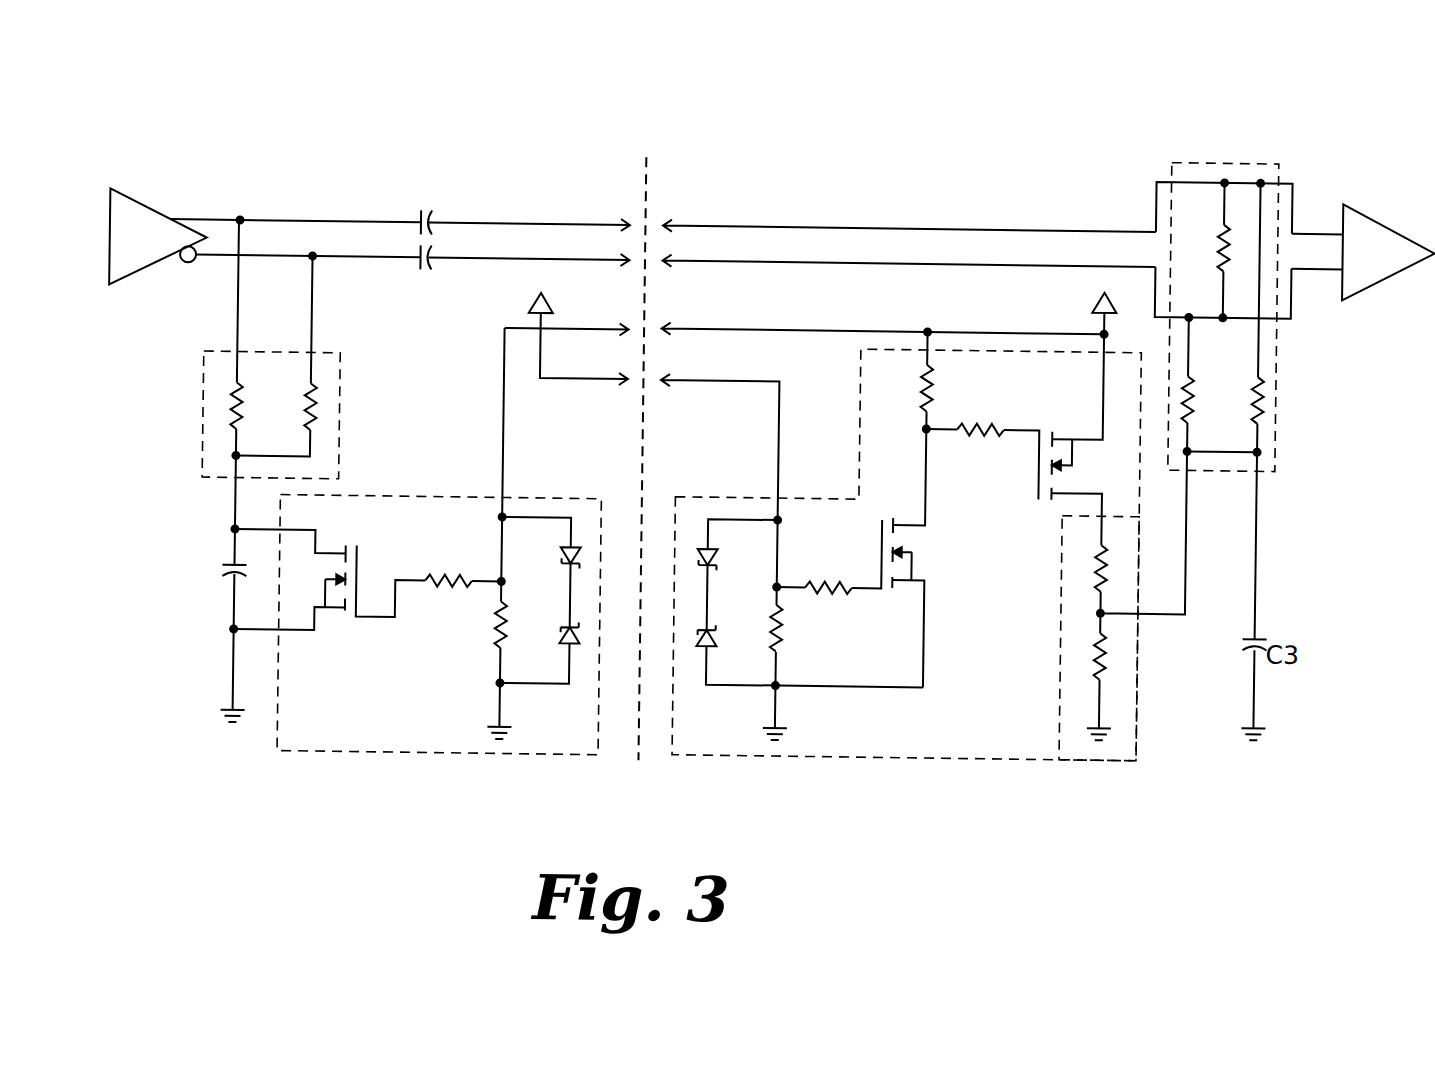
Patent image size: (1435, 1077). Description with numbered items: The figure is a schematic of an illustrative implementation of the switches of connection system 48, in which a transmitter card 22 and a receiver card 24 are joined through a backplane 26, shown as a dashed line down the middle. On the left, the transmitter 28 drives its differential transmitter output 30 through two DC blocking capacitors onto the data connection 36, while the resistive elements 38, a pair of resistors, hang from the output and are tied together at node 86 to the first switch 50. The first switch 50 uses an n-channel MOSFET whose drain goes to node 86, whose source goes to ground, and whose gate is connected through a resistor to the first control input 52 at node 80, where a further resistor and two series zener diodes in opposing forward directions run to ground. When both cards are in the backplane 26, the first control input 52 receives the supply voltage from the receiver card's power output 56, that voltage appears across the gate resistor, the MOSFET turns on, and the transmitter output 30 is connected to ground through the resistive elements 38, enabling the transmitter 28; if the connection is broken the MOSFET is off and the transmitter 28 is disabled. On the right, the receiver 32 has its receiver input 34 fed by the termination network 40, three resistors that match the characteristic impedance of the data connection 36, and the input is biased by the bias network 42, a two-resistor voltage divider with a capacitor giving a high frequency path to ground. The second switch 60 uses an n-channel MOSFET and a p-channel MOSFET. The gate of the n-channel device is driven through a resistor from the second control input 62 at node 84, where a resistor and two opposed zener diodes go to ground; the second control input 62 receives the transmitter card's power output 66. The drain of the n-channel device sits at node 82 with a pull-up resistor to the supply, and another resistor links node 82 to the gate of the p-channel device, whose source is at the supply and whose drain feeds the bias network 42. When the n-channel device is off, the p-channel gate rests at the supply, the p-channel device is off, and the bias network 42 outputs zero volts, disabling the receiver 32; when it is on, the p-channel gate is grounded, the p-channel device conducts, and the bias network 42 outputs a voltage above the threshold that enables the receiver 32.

The transmitter card 22 is at (447, 165).
The receiver card 24 is at (917, 158).
The backplane 26 is at (646, 148).
The transmitter 28 is at (137, 280).
The transmitter output 30 is at (217, 196).
The receiver 32 is at (1377, 268).
The receiver input 34 is at (1334, 165).
The data connection 36 is at (340, 208).
The resistive elements 38 is at (343, 390).
The termination network 40 is at (1279, 354).
The bias network 42 is at (1144, 678).
The connection system 48 is at (284, 770).
The first switch 50 is at (439, 750).
The first control input 52 is at (508, 431).
The power output 56 is at (768, 323).
The second switch 60 is at (842, 748).
The second control input 62 is at (782, 445).
The power output 66 is at (555, 374).
The node 80 is at (510, 579).
The node 82 is at (923, 421).
The node 84 is at (777, 581).
The node 86 is at (236, 529).